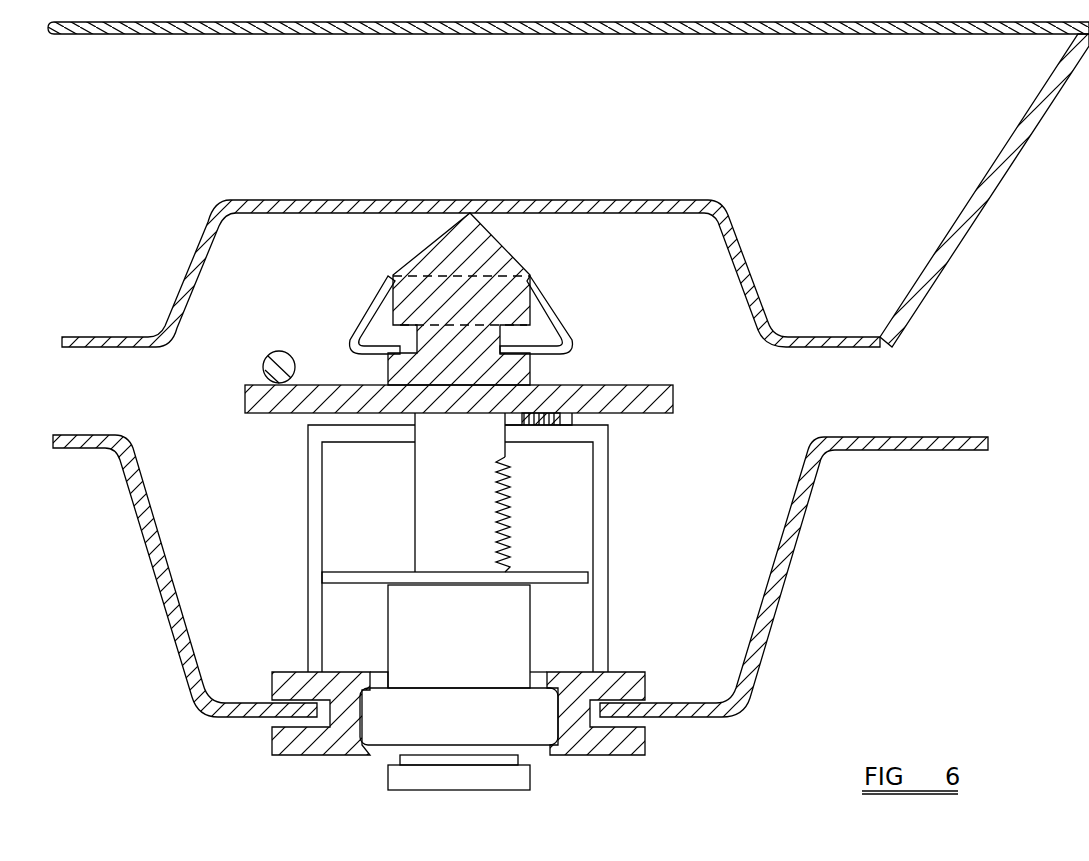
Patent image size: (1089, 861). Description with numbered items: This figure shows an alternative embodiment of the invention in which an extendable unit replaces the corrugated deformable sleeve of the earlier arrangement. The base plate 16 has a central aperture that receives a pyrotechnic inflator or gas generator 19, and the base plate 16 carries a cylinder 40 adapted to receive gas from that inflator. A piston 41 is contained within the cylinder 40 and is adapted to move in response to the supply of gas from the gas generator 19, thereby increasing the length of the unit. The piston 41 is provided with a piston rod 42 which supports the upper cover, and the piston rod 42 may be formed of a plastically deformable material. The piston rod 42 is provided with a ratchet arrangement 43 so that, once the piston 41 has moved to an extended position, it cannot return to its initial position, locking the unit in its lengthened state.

The base plate 16 is at (312, 747).
The gas generator 19 is at (502, 722).
The cylinder 40 is at (608, 526).
The piston 41 is at (437, 532).
The piston rod 42 is at (438, 480).
The ratchet arrangement 43 is at (548, 425).